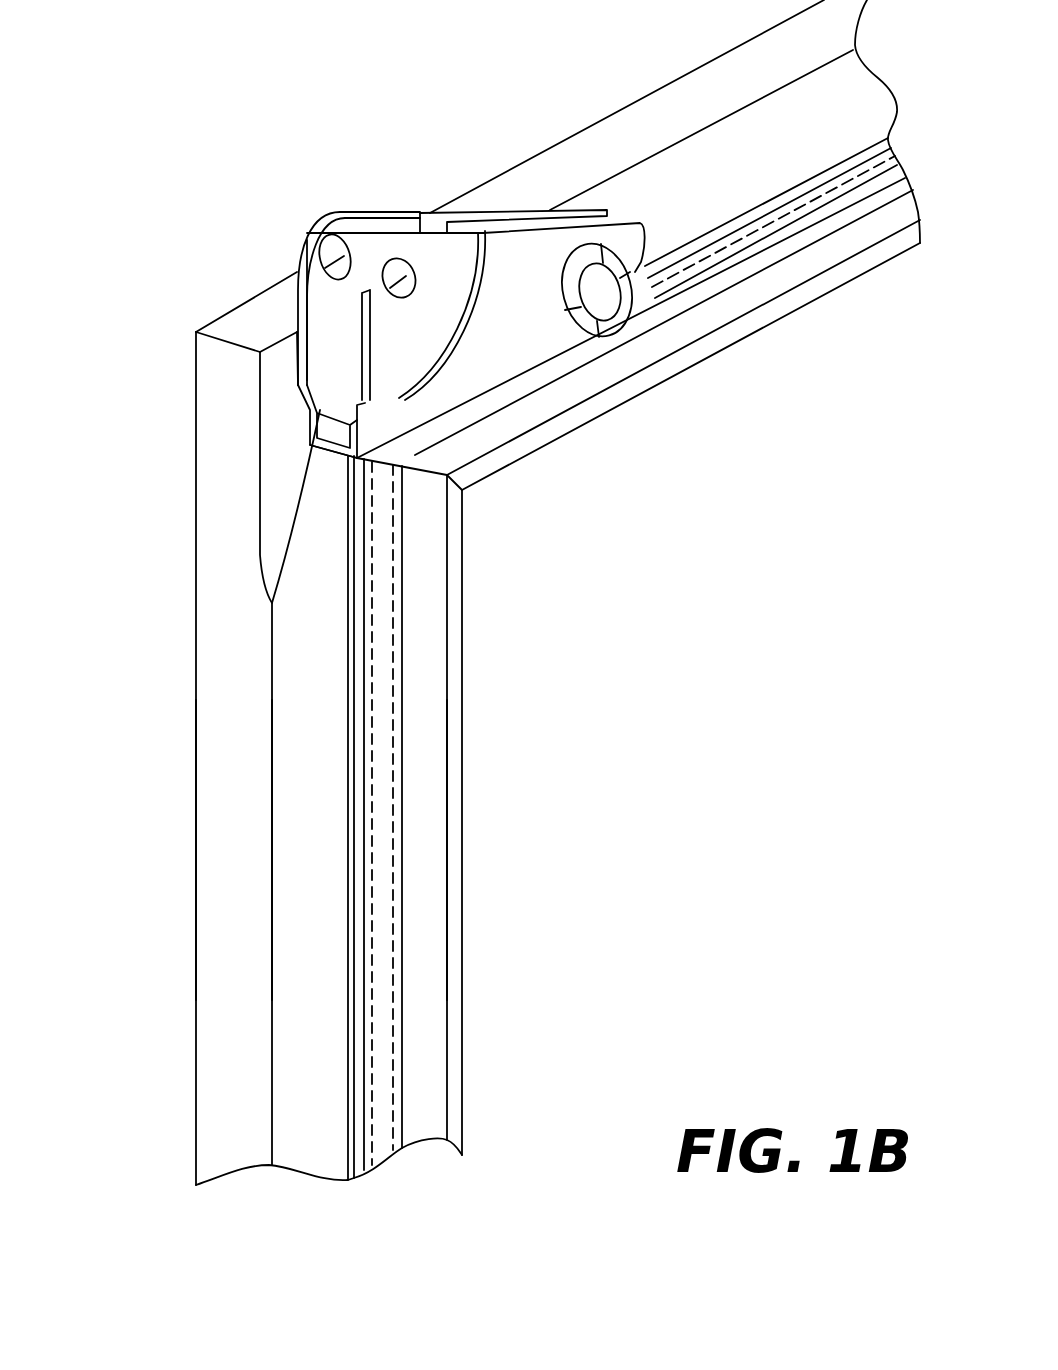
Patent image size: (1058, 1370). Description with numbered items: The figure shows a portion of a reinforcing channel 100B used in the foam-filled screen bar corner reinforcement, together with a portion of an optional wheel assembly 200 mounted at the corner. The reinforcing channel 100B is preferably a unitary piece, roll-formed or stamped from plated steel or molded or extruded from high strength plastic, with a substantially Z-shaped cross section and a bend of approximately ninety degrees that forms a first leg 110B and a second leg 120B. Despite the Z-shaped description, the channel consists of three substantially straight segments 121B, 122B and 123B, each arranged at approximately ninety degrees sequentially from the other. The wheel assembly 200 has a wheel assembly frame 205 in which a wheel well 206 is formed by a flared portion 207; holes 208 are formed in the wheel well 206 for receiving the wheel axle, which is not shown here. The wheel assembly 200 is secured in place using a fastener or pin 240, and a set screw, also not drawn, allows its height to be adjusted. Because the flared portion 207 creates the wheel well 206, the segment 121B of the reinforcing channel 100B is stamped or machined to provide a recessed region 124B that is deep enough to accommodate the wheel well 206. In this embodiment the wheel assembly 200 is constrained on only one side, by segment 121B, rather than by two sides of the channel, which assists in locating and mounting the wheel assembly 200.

The reinforcing channel 100B is at (491, 592).
The first leg 110B is at (812, 312).
The second leg 120B is at (351, 728).
The segment 121B is at (228, 917).
The segment 122B is at (298, 825).
The segment 123B is at (462, 848).
The recessed region 124B is at (280, 450).
The wheel assembly 200 is at (395, 319).
The wheel assembly frame 205 is at (322, 212).
The wheel well 206 is at (296, 272).
The flared portion 207 is at (387, 410).
The holes 208 is at (318, 256).
The fastener or pin 240 is at (603, 302).